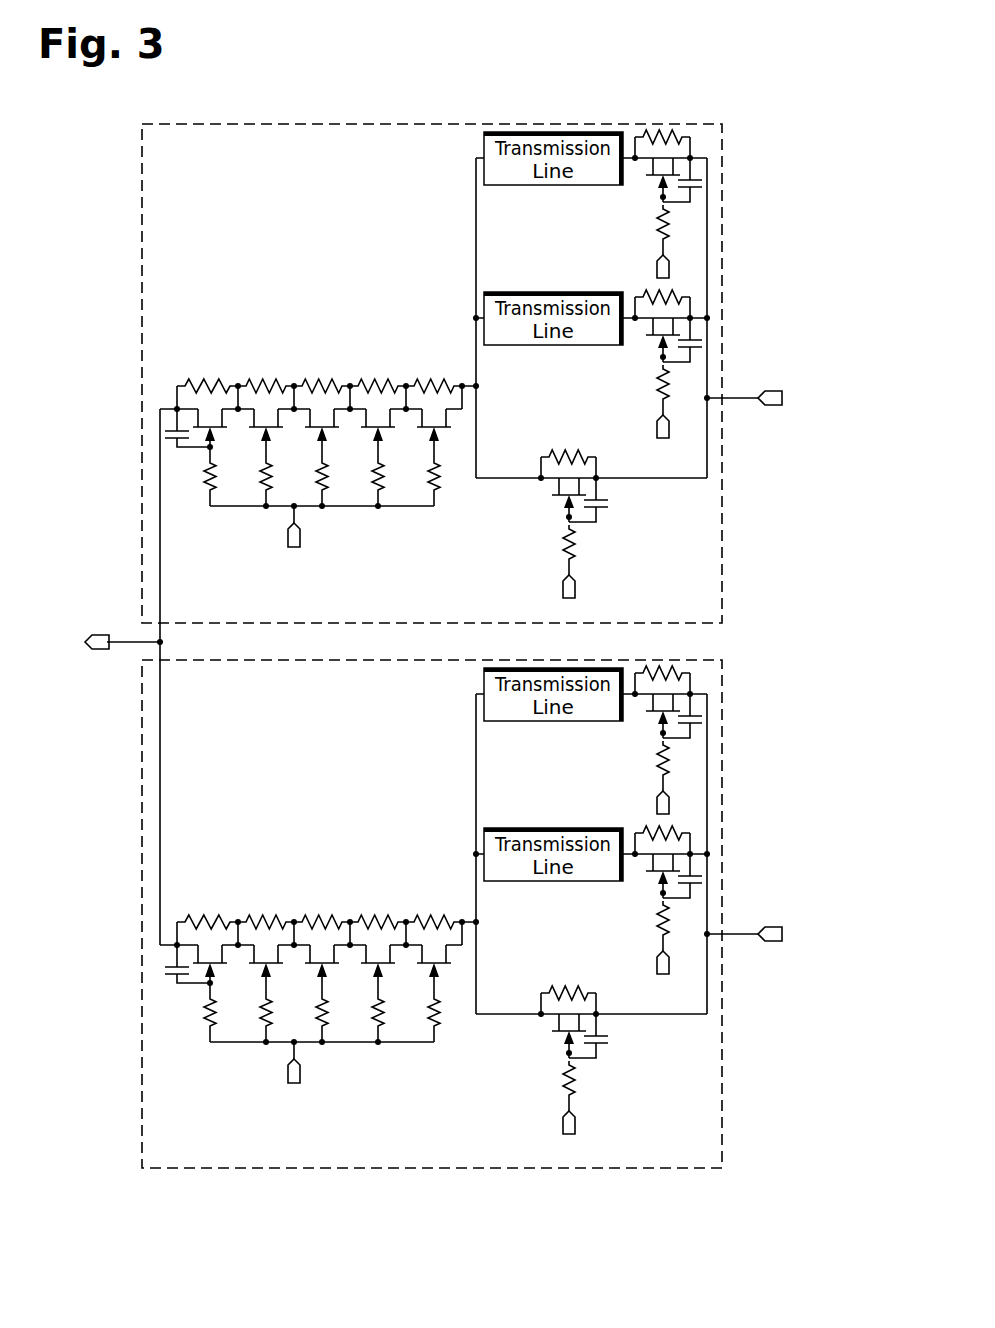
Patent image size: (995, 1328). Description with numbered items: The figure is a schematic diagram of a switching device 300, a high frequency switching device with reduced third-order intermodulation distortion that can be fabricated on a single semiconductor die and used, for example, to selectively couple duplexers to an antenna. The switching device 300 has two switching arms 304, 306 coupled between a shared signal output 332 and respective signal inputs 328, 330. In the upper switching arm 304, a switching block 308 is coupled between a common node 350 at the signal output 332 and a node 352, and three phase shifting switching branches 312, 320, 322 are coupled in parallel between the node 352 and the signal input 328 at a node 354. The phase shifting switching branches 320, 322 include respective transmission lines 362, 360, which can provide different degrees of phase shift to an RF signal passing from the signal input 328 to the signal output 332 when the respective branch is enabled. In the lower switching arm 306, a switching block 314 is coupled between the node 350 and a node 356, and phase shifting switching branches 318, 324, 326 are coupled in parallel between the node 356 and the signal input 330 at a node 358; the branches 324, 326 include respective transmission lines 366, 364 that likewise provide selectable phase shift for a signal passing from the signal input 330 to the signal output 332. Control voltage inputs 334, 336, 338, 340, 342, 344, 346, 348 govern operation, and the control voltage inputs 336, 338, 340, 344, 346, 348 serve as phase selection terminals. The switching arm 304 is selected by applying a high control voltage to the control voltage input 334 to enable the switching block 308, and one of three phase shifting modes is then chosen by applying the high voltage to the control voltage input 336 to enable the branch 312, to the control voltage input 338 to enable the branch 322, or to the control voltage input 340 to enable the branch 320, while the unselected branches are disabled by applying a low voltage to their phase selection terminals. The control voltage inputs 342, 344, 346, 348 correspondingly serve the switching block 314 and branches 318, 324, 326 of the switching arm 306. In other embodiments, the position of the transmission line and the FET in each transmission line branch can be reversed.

The switching device 300 is at (783, 114).
The switching arm 304 is at (343, 123).
The switching arm 306 is at (385, 1169).
The switching block 308 is at (228, 347).
The phase shifting switching branch 312 is at (512, 518).
The switching block 314 is at (228, 883).
The phase shifting switching branch 318 is at (512, 1054).
The phase shifting switching branch 320 is at (454, 188).
The phase shifting switching branch 322 is at (458, 306).
The phase shifting switching branch 324 is at (454, 724).
The phase shifting switching branch 326 is at (458, 842).
The signal input 328 is at (777, 406).
The signal input 330 is at (777, 942).
The signal output 332 is at (95, 636).
The control voltage input 334 is at (288, 533).
The control voltage input 336 is at (564, 589).
The control voltage input 338 is at (656, 428).
The control voltage input 340 is at (656, 272).
The control voltage input 342 is at (288, 1069).
The control voltage input 344 is at (577, 1128).
The control voltage input 346 is at (656, 964).
The control voltage input 348 is at (656, 808).
The node 350 is at (161, 642).
The node 352 is at (477, 388).
The node 354 is at (708, 318).
The node 356 is at (477, 924).
The node 358 is at (708, 854).
The transmission line 360 is at (527, 346).
The transmission line 362 is at (532, 186).
The transmission line 364 is at (527, 882).
The transmission line 366 is at (532, 722).